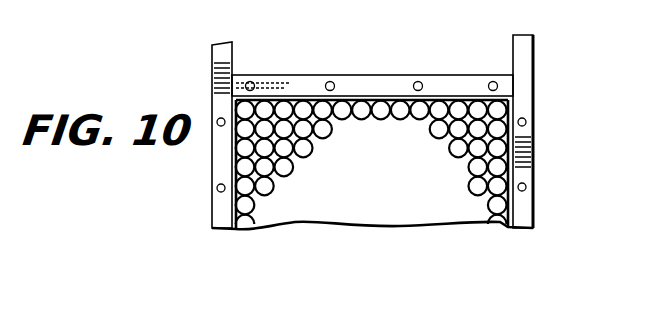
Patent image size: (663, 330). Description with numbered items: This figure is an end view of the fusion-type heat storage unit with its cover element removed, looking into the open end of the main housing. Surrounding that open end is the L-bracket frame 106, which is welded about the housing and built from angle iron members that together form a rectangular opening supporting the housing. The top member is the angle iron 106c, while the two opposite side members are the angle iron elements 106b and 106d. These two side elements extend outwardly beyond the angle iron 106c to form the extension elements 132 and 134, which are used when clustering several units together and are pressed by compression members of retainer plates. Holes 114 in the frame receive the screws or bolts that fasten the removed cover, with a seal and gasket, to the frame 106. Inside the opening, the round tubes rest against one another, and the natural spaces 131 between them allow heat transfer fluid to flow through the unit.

The L-bracket frame 106 is at (373, 127).
The angle iron element 106b is at (553, 127).
The angle iron 106c is at (388, 77).
The angle iron element 106d is at (217, 127).
The holes 114 is at (530, 122).
The spaces 131 is at (241, 131).
The extension element 132 is at (225, 58).
The extension element 134 is at (530, 52).